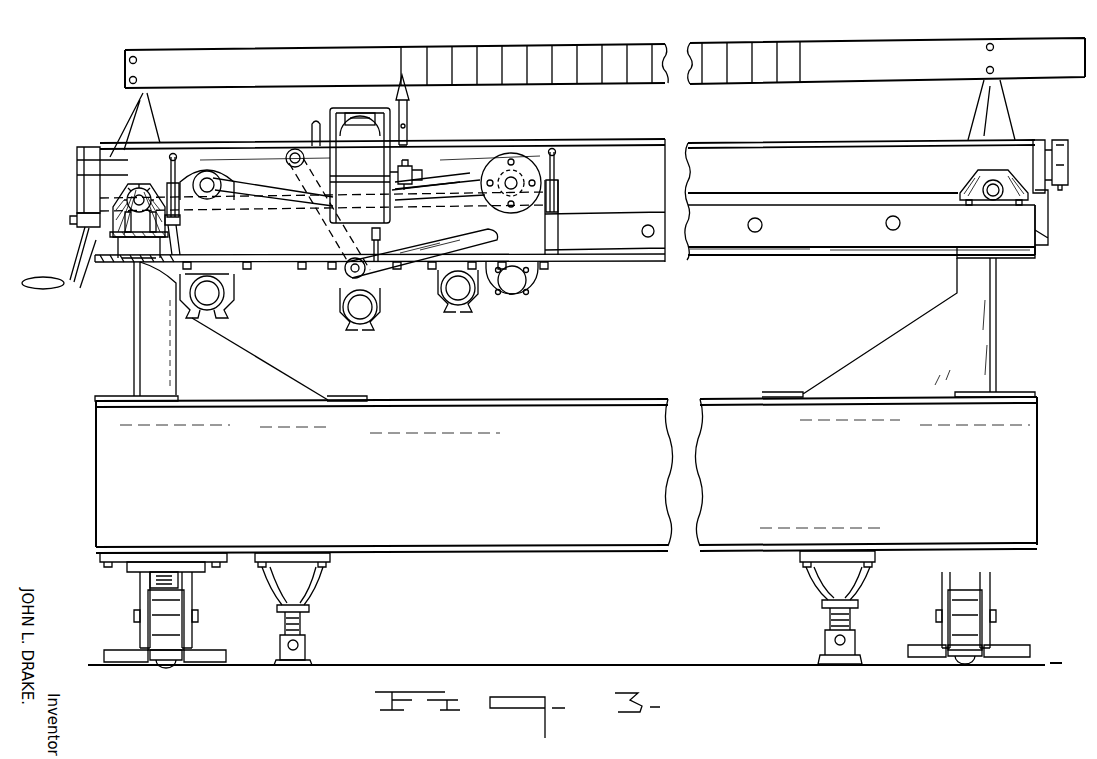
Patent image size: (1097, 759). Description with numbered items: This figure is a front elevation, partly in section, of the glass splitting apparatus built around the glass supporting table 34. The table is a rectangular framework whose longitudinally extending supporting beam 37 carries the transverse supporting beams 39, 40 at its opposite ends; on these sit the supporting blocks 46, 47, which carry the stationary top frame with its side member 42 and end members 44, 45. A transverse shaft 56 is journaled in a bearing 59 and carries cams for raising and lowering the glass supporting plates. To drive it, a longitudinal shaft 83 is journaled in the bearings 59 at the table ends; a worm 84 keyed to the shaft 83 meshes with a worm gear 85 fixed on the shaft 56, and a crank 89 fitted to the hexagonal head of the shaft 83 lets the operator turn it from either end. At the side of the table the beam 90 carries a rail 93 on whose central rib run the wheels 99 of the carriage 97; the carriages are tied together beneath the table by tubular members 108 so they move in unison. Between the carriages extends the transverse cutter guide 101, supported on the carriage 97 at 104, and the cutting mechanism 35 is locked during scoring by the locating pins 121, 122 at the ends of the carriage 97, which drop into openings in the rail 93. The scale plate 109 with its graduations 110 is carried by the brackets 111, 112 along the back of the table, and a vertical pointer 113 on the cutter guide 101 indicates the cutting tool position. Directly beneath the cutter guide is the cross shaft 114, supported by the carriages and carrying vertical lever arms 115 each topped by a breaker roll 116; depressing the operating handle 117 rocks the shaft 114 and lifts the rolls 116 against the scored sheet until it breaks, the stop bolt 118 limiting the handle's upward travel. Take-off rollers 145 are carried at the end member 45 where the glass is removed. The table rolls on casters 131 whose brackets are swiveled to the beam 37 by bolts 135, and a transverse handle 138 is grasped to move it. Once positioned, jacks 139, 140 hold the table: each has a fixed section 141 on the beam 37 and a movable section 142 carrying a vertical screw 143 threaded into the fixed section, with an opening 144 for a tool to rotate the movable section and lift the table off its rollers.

The scale plate 109 is at (346, 61).
The graduations 110 is at (503, 58).
The bracket 111 is at (126, 100).
The bracket 112 is at (986, 102).
The vertical pointer 113 is at (410, 101).
The support of cutter guide on carriage 104 is at (340, 136).
The transverse cutter guide 101 is at (352, 95).
The shaft 56 is at (138, 184).
The locating pin 122 is at (173, 156).
The wheels or rollers 99 is at (192, 180).
The breaker roll 116 is at (286, 159).
The lever arm 115 is at (310, 231).
The cutting mechanism 35 is at (408, 160).
The carriage 97 is at (431, 179).
The locating pin 121 is at (556, 158).
The side member 42 is at (640, 162).
The glass supporting table 34 is at (794, 134).
The end member 45 is at (1038, 140).
The take-off rollers 145 is at (1060, 140).
The bearing 59 is at (114, 198).
The end member 44 is at (76, 171).
The worm gear 85 is at (128, 189).
The crank 89 is at (54, 252).
The worm 84 is at (139, 235).
The shaft 83 is at (176, 220).
The supporting block 46 is at (98, 248).
The stop bolt 118 is at (378, 250).
The operating handle 117 is at (508, 234).
The cross shaft 114 is at (346, 278).
The tubular members 108 is at (210, 304).
The transverse supporting beam 39 is at (132, 344).
The rail 93 is at (710, 206).
The beam 90 is at (798, 248).
The supporting block 47 is at (1036, 226).
The transverse supporting beam 40 is at (996, 324).
The longitudinally extending supporting beam 37 is at (466, 534).
The bolt 135 is at (152, 566).
The wheel or caster 131 is at (160, 632).
The transverse handle 138 is at (198, 660).
The jack 139 is at (314, 623).
The fixed section 141 is at (810, 580).
The jack 140 is at (856, 618).
The vertical screw 143 is at (828, 617).
The movable section 142 is at (824, 642).
The opening 144 is at (848, 640).